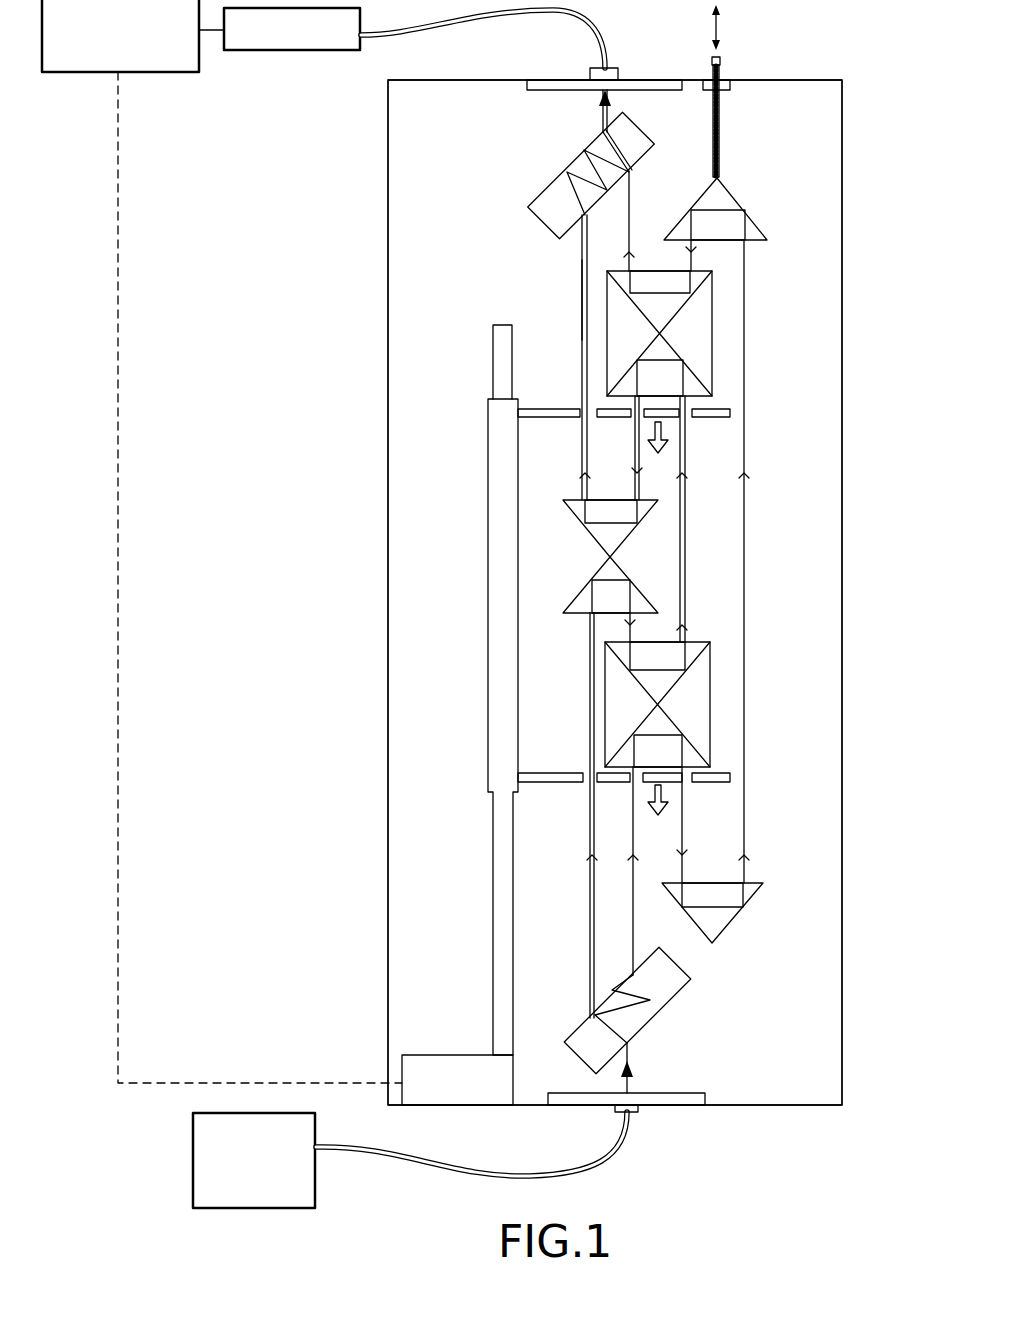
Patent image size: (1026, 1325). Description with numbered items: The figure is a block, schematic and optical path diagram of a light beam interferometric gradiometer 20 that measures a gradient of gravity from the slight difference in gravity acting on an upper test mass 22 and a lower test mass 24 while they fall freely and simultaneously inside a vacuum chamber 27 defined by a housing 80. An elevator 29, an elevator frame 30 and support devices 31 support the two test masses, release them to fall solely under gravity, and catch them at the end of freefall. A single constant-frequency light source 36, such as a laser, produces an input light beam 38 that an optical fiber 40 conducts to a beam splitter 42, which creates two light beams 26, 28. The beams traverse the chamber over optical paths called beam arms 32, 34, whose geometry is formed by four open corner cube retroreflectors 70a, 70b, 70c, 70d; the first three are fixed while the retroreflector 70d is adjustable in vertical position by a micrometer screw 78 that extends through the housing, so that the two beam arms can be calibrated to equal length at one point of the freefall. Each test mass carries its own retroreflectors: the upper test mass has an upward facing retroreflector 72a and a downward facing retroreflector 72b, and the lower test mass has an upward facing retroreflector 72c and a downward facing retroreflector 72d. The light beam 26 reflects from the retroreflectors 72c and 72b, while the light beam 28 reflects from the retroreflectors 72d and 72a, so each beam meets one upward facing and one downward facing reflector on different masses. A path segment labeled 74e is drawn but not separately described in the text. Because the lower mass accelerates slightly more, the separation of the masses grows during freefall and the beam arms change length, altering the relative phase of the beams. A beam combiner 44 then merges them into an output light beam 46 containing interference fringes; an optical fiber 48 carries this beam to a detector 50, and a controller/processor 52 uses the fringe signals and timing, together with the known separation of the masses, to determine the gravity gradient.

The light beam interferometric gradiometer 20 is at (260, 466).
The upper test mass 22 is at (724, 326).
The lower test mass 24 is at (733, 693).
The light beam 26 is at (581, 245).
The vacuum chamber 27 is at (460, 168).
The light beam 28 is at (628, 258).
The elevator 29 is at (455, 1055).
The elevator frame 30 is at (490, 538).
The support devices 31 is at (730, 413).
The beam arm 32 is at (572, 380).
The beam arm 34 is at (636, 232).
The light source 36 is at (316, 1189).
The input light beam 38 is at (630, 1075).
The optical fiber 40 is at (626, 1150).
The beam splitter 42 is at (677, 990).
The beam combiner 44 is at (545, 201).
The output light beam 46 is at (601, 97).
The optical fiber 48 is at (500, 26).
The detector 50 is at (265, 50).
The controller/processor 52 is at (163, 72).
The open corner cube retroreflector 70a is at (582, 601).
The open corner cube retroreflector 70b is at (570, 505).
The open corner cube retroreflector 70c is at (755, 895).
The adjustable open corner cube retroreflector 70d is at (727, 195).
The upward facing retroreflector 72a is at (712, 279).
The downward facing retroreflector 72b is at (712, 390).
The upward facing retroreflector 72c is at (710, 652).
The downward facing retroreflector 72d is at (705, 752).
The reference beam path 74e is at (581, 302).
The micrometer screw 78 is at (730, 86).
The housing 80 is at (842, 330).